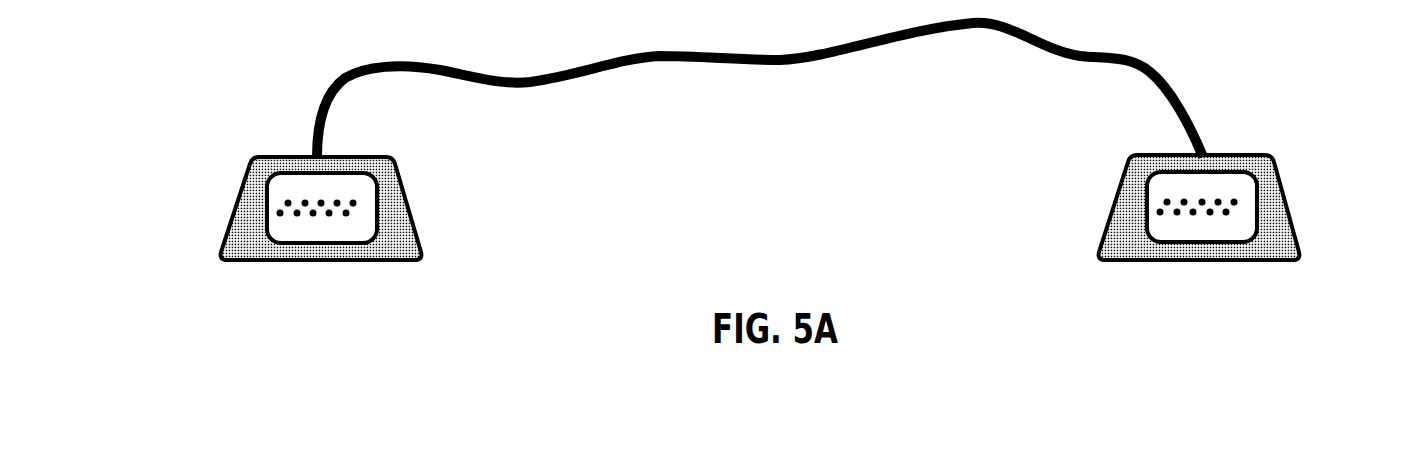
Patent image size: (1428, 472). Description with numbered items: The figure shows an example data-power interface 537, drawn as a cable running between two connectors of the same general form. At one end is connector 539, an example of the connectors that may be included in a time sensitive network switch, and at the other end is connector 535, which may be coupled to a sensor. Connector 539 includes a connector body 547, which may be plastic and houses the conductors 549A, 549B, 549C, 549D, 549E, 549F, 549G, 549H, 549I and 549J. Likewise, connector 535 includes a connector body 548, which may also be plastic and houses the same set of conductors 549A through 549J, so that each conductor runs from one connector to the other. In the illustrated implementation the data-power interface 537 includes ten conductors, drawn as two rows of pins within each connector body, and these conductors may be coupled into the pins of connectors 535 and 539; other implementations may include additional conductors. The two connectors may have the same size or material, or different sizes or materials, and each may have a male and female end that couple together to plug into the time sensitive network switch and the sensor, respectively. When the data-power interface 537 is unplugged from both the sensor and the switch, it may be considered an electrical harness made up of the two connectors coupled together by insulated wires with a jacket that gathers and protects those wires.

The connector 535 is at (1245, 190).
The data-power interface 537 is at (1108, 38).
The connector 539 is at (371, 207).
The connector body 547 is at (402, 181).
The connector body 548 is at (1285, 182).
The conductor 549A is at (288, 203).
The conductor 549B is at (305, 203).
The conductor 549C is at (321, 203).
The conductor 549D is at (337, 203).
The conductor 549E is at (353, 203).
The conductor 549F is at (280, 213).
The conductor 549G is at (297, 213).
The conductor 549H is at (313, 213).
The conductor 549I is at (329, 213).
The conductor 549J is at (346, 213).